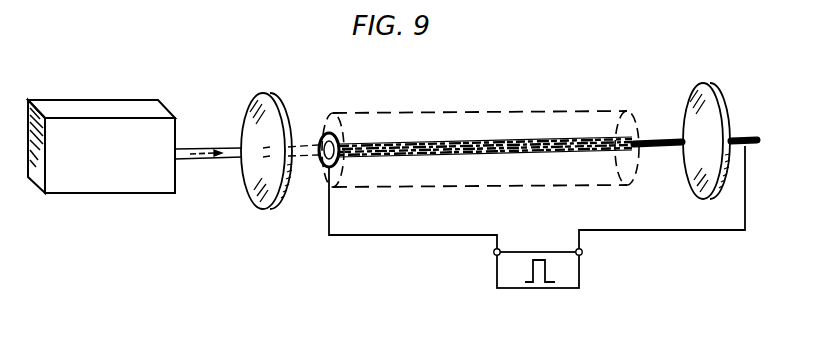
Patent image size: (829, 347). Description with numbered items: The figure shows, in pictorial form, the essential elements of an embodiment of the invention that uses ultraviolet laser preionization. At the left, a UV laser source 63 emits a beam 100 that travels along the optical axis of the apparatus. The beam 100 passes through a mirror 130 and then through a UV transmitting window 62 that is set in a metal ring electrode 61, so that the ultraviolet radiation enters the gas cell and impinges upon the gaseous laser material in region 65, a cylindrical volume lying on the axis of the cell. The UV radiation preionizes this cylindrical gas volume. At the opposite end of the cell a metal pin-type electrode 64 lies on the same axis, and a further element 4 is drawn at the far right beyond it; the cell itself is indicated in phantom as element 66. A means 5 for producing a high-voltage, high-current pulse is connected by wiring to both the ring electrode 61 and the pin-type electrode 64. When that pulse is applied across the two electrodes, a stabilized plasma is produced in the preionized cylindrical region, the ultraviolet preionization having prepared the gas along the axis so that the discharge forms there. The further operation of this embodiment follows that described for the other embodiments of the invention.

The UV laser source 63 is at (100, 112).
The beam 100 is at (222, 160).
The mirror 130 is at (281, 110).
The metal ring electrode 61 is at (325, 134).
The UV transmitting window 62 is at (323, 166).
The tubular housing (phantom) 66 is at (523, 111).
The region 65 is at (420, 157).
The metal pin-type electrode 64 is at (660, 139).
The lens 4 is at (717, 98).
The means for producing a high-voltage, high-current pulse 5 is at (496, 270).